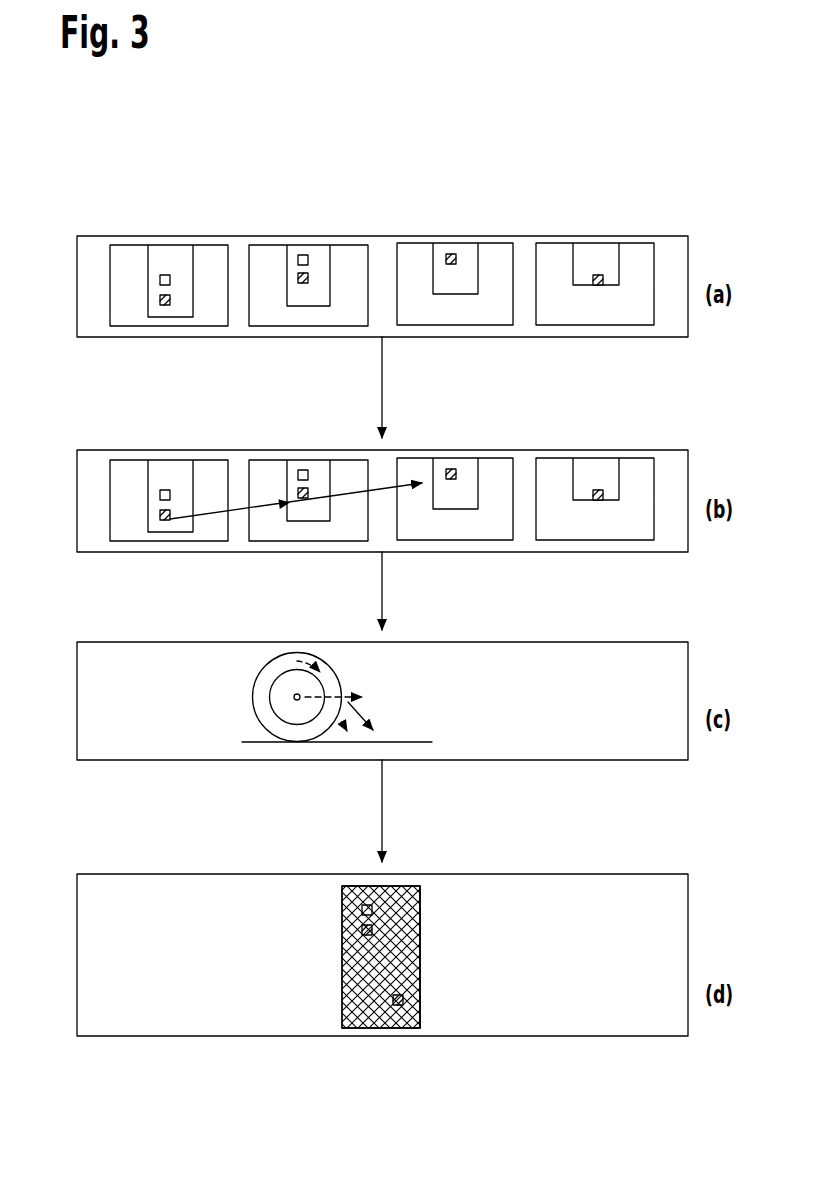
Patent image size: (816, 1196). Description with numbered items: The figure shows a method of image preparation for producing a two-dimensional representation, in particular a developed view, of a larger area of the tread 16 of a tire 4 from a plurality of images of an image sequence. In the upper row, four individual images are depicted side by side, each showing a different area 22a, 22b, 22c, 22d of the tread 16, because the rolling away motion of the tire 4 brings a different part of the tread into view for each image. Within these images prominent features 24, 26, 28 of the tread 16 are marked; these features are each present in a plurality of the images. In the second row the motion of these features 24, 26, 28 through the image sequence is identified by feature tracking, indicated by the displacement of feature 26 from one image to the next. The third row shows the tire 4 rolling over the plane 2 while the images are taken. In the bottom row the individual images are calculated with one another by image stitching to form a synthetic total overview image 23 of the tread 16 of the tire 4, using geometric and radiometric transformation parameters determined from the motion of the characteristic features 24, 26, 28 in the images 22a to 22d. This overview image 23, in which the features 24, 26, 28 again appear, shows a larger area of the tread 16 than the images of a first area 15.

The area of tread / image 22a is at (172, 245).
The area of tread / image 22b is at (310, 245).
The area of tread / image 22c is at (455, 243).
The area of tread / image 22d is at (597, 243).
The prominent feature 24 is at (170, 280).
The prominent feature 26 is at (170, 300).
The prominent feature 28 is at (598, 285).
The tire 4 is at (253, 697).
The plane 2 is at (418, 742).
The overview image 23 is at (452, 870).
The tread 16 is at (460, 946).
The first area 15 is at (412, 975).